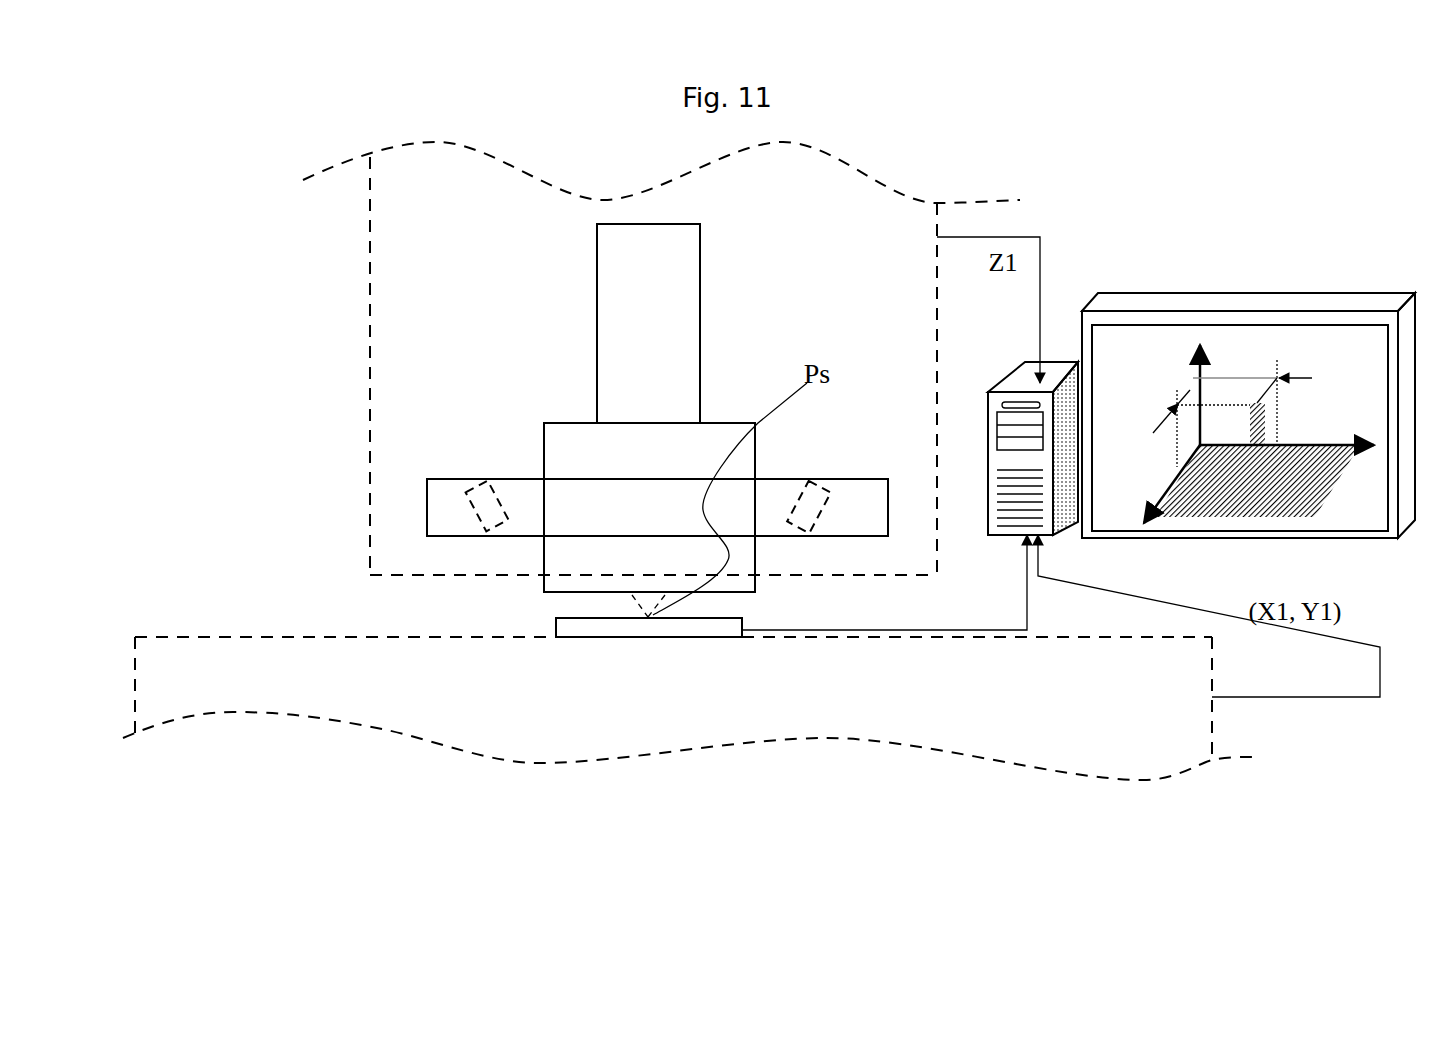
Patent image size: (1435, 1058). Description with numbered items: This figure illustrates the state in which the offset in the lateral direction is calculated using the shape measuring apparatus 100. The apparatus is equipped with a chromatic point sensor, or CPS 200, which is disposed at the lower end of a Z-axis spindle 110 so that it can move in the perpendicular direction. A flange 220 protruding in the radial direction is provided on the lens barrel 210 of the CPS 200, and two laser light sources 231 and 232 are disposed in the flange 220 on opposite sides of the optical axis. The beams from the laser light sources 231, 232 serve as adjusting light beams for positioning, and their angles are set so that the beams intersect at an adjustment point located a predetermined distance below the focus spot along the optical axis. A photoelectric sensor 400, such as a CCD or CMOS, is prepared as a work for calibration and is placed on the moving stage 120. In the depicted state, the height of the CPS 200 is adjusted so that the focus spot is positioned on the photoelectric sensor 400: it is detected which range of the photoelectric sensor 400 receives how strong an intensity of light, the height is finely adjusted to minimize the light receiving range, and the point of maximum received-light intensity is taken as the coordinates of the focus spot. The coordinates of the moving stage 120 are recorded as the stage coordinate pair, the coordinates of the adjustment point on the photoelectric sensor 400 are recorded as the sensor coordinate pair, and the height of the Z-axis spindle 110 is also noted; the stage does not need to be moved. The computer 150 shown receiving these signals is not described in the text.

The shape measuring apparatus 100 is at (1115, 255).
The Z-axis spindle 110 is at (408, 340).
The moving stage 120 is at (202, 640).
The control device (computer) 150 is at (1012, 383).
The chromatic point sensor 200 is at (695, 337).
The lens barrel 210 is at (578, 437).
The flange 220 is at (862, 502).
The laser light source 231 is at (488, 500).
The laser light source 232 is at (823, 478).
The photoelectric sensor 400 is at (600, 628).